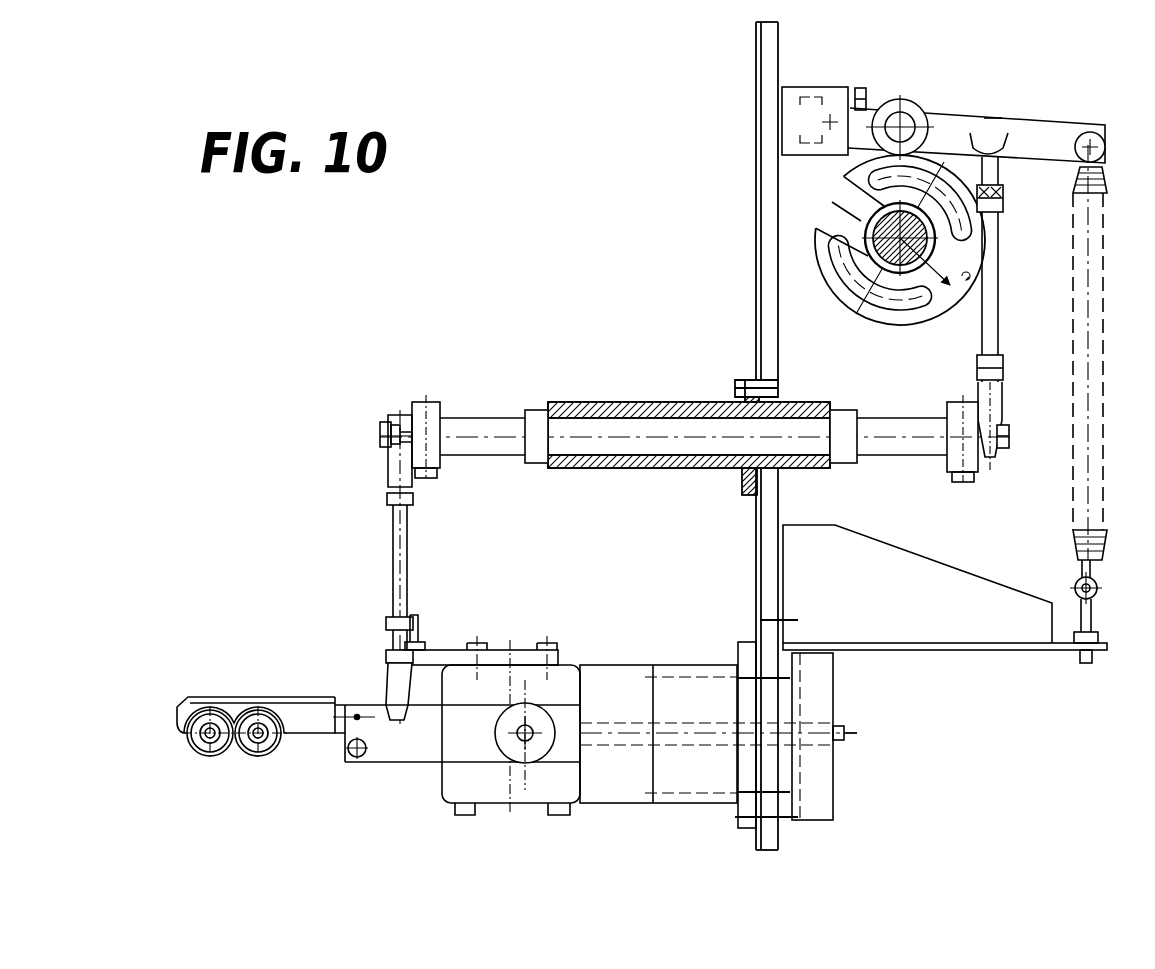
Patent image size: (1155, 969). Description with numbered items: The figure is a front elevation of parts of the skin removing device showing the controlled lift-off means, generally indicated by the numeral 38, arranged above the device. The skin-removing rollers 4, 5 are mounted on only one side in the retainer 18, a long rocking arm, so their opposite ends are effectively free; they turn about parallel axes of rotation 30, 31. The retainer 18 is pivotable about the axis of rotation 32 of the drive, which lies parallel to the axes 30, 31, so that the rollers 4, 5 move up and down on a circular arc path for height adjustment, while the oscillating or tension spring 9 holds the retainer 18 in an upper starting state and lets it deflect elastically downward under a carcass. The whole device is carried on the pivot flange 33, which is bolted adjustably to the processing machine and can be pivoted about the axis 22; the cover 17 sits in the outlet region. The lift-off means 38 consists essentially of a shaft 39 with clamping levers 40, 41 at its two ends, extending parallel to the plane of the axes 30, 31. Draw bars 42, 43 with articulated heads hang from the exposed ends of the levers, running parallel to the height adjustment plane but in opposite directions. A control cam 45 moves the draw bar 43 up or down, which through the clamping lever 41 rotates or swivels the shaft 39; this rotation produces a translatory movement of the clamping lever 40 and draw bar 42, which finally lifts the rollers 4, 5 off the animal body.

The skin-removing roller 4 is at (205, 746).
The skin-removing roller 5 is at (253, 748).
The oscillating spring 9 is at (1078, 480).
The cover 17 is at (314, 702).
The retainer 18 is at (232, 686).
The axis 22 is at (857, 735).
The axis of rotation 30 is at (204, 746).
The axis of rotation 31 is at (254, 748).
The axis of rotation 32 is at (530, 745).
The pivot flange 33 is at (699, 665).
The means for lifting off the skin removing rollers 38 is at (610, 203).
The shaft 39 is at (481, 420).
The clamping lever 40 is at (420, 402).
The clamping lever 41 is at (960, 403).
The draw bar 42 is at (398, 548).
The draw bar 43 is at (993, 318).
The control cam 45 is at (833, 270).